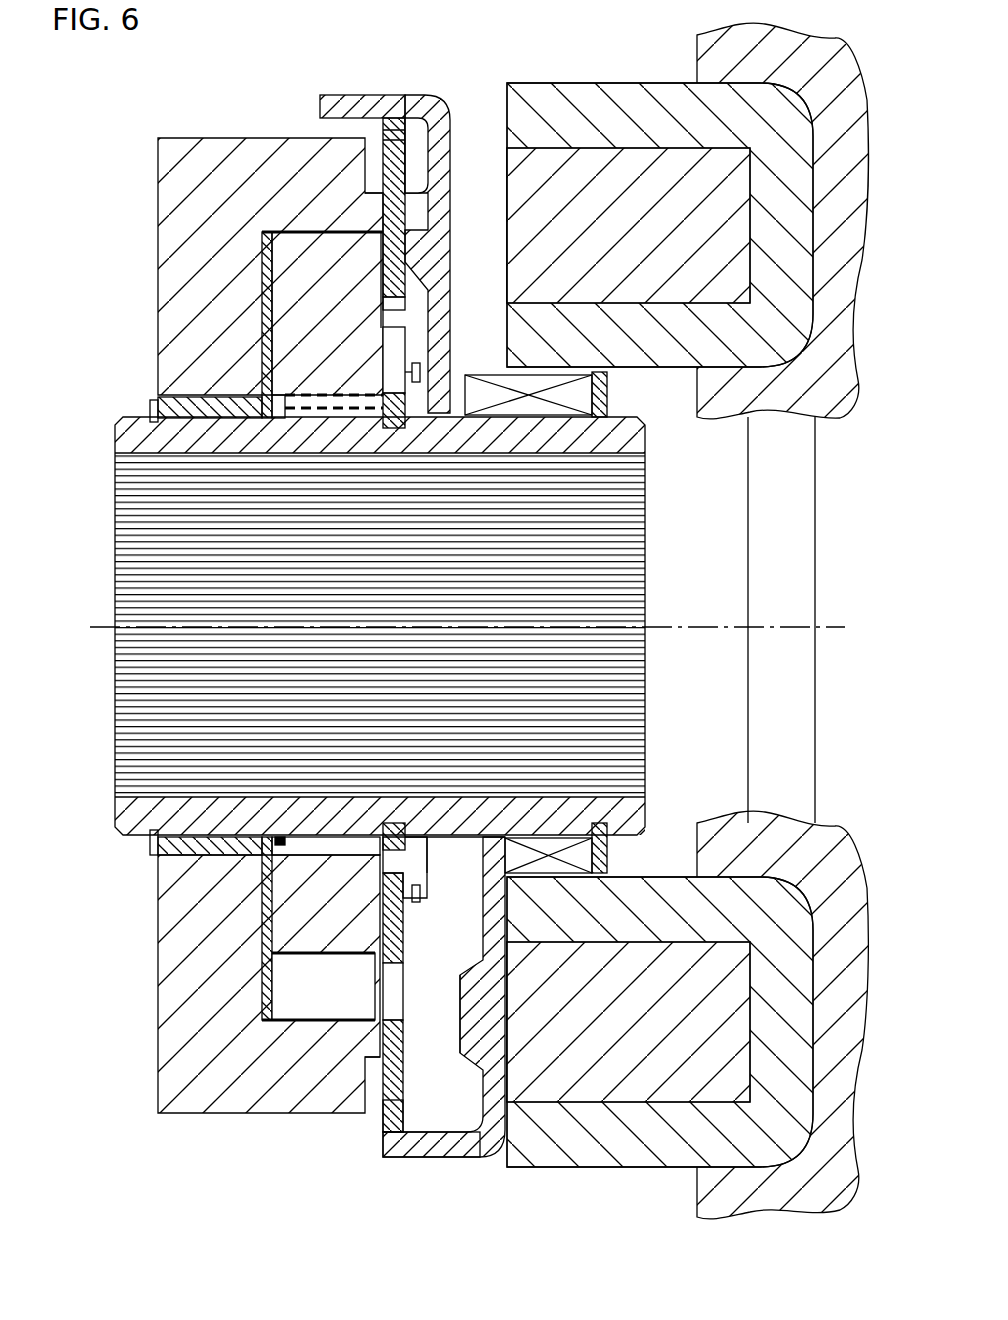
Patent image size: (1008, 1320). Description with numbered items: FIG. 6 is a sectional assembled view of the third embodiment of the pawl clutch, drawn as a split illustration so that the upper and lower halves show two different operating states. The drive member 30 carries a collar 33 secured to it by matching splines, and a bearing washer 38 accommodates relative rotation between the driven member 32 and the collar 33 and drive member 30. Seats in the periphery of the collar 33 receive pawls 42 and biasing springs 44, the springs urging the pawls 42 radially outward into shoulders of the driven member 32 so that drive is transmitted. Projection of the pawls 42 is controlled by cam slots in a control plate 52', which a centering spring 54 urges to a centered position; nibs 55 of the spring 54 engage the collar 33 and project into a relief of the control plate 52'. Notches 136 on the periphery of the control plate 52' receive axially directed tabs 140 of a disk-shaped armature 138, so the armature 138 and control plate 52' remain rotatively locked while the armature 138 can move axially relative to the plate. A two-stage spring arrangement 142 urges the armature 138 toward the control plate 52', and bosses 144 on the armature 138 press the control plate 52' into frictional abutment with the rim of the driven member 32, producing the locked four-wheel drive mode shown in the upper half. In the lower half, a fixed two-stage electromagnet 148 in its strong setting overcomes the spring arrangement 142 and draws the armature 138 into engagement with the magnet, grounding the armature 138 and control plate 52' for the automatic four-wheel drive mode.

The drive member 30 is at (125, 427).
The driven member 32 is at (205, 160).
The collar 33 is at (300, 245).
The bearing washer 38 is at (263, 283).
The pawls 42 is at (265, 1002).
The biasing springs 44 is at (295, 995).
The control plate 52' is at (418, 986).
The centering spring 54 is at (380, 413).
The nibs 55 is at (393, 343).
The notches 136 is at (395, 1125).
The armature 138 is at (446, 110).
The tabs 140 is at (425, 1150).
The two-stage spring arrangement 142 is at (470, 375).
The bosses 144 is at (417, 227).
The electromagnet 148 is at (735, 230).